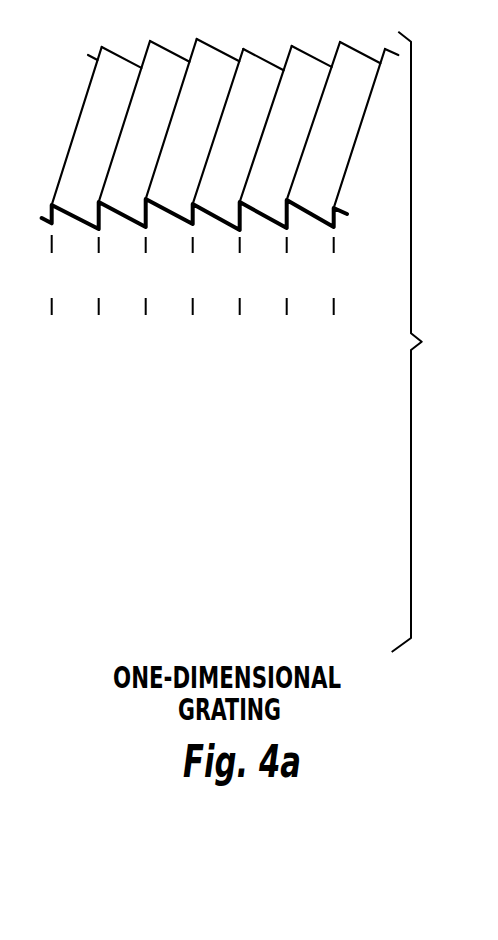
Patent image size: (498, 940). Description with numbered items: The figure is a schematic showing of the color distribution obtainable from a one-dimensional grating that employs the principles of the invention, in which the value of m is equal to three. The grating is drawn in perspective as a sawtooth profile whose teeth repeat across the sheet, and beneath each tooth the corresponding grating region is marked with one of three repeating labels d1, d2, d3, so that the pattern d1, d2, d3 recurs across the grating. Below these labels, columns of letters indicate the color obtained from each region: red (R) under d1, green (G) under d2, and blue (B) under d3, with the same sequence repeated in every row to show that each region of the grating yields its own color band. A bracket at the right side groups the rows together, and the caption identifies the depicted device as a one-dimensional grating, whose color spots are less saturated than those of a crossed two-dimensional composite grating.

The first grating period (red channel) d1 is at (194, 441).
The second grating period (green channel) d2 is at (170, 442).
The third grating period (blue channel) d3 is at (218, 442).